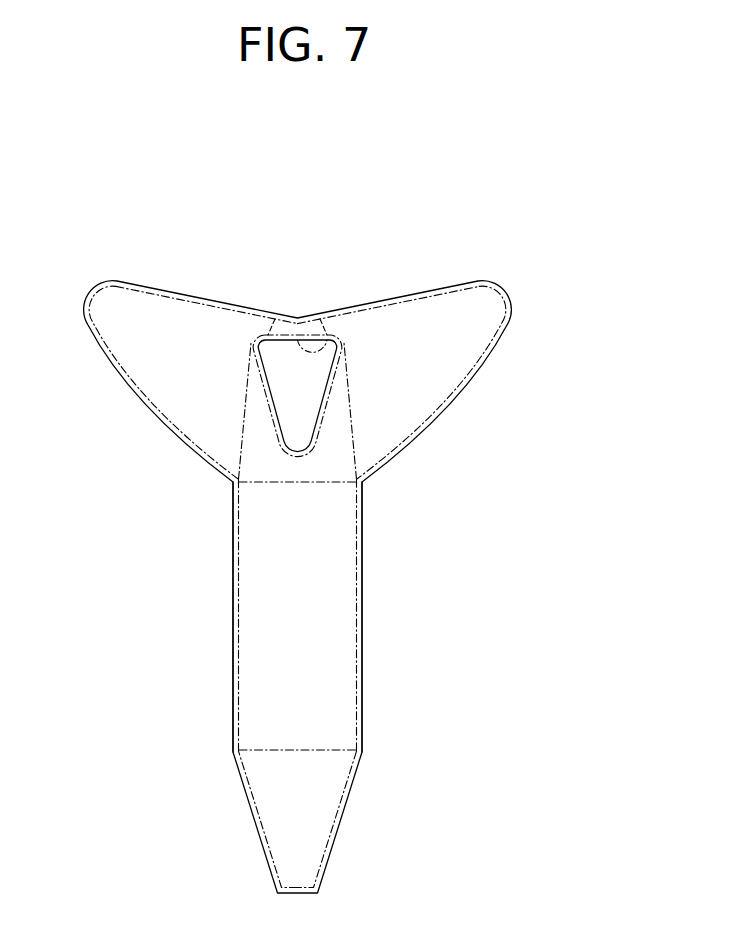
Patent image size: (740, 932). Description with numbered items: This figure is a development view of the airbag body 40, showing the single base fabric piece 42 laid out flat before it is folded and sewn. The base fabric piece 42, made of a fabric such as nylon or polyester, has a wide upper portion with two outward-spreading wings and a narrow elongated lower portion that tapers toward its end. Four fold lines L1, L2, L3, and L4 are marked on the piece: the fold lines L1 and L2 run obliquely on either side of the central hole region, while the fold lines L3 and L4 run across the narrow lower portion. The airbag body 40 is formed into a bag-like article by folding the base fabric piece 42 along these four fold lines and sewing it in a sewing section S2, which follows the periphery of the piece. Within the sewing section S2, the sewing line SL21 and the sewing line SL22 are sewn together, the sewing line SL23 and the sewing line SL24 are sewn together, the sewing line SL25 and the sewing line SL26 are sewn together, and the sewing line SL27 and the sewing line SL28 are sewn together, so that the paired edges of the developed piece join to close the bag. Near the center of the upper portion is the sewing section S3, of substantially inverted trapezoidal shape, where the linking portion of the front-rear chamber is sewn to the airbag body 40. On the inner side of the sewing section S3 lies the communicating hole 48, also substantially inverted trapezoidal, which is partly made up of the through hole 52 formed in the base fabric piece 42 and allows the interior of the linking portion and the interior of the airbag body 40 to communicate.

The base fabric piece 42 is at (362, 686).
The airbag body 40 is at (299, 587).
The communicating hole 48 is at (306, 333).
The through hole 52 is at (330, 338).
The sewing section S2 is at (228, 690).
The sewing section S3 is at (255, 333).
The sewing line SL21 is at (431, 292).
The sewing line SL22 is at (342, 812).
The sewing line SL23 is at (158, 290).
The sewing line SL24 is at (257, 822).
The sewing line SL25 is at (456, 404).
The sewing line SL26 is at (357, 578).
The sewing line SL27 is at (140, 408).
The sewing line SL28 is at (238, 580).
The fold line L1 is at (346, 423).
The fold line L2 is at (249, 425).
The fold line L3 is at (296, 484).
The fold line L4 is at (297, 750).